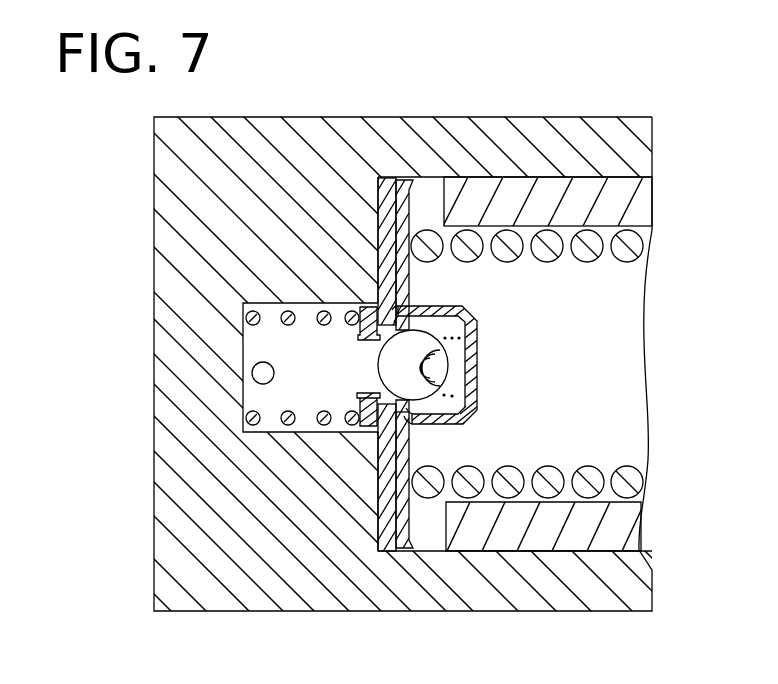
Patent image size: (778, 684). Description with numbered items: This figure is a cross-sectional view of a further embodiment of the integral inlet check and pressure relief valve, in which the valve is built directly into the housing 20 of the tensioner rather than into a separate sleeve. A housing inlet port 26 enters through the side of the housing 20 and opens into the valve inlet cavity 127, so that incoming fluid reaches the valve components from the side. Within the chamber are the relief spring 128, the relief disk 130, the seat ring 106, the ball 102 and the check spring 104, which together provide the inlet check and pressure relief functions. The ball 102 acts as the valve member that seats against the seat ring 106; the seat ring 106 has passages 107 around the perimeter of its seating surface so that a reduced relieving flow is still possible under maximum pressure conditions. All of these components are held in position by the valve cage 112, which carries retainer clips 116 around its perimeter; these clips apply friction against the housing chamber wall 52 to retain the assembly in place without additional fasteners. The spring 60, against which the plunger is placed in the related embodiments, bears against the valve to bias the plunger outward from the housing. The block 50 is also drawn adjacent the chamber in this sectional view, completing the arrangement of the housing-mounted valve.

The housing 20 is at (175, 215).
The housing inlet port 26 is at (263, 375).
The support block 50 is at (638, 203).
The housing chamber wall 52 is at (412, 178).
The spring 60 is at (642, 247).
The ball 102 is at (442, 357).
The check spring 104 is at (456, 396).
The seat ring 106 is at (390, 178).
The passages 107 is at (400, 414).
The valve cage 112 is at (477, 330).
The retainer clips 116 is at (412, 182).
The valve inlet cavity 127 is at (265, 342).
The relief spring 128 is at (248, 418).
The relief disk 130 is at (368, 410).